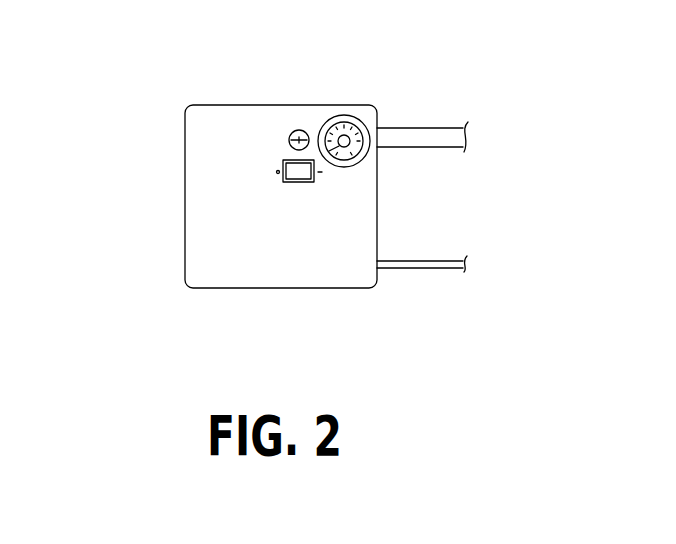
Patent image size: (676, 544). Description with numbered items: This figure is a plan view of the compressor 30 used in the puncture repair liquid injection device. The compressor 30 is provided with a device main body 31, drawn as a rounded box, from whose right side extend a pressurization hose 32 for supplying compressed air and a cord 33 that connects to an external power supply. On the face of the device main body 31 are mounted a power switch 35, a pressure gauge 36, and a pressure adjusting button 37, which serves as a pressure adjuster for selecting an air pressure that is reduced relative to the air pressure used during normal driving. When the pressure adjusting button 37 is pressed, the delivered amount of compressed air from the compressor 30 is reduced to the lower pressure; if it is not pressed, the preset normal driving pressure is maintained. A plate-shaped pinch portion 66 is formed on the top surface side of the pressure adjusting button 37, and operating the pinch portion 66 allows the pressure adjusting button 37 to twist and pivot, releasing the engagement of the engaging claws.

The compressor 30 is at (267, 188).
The device main body 31 is at (208, 157).
The pressurization hose 32 is at (430, 134).
The cord 33 is at (428, 268).
The power switch 35 is at (285, 158).
The pressure gauge 36 is at (357, 115).
The pressure adjusting button 37 is at (300, 130).
The pinch portion 66 is at (306, 131).